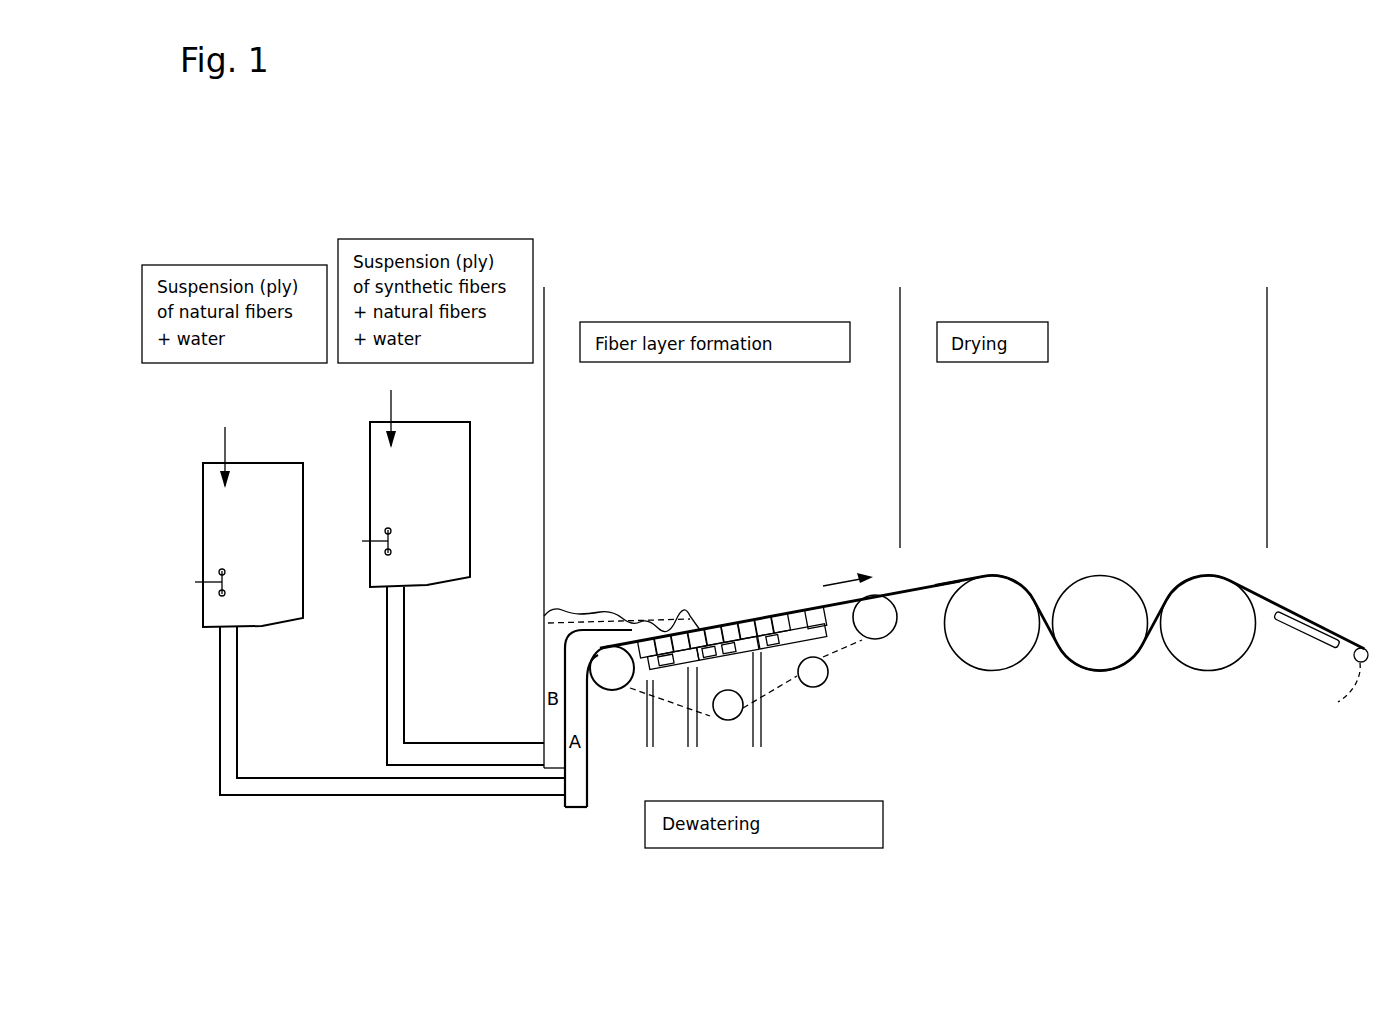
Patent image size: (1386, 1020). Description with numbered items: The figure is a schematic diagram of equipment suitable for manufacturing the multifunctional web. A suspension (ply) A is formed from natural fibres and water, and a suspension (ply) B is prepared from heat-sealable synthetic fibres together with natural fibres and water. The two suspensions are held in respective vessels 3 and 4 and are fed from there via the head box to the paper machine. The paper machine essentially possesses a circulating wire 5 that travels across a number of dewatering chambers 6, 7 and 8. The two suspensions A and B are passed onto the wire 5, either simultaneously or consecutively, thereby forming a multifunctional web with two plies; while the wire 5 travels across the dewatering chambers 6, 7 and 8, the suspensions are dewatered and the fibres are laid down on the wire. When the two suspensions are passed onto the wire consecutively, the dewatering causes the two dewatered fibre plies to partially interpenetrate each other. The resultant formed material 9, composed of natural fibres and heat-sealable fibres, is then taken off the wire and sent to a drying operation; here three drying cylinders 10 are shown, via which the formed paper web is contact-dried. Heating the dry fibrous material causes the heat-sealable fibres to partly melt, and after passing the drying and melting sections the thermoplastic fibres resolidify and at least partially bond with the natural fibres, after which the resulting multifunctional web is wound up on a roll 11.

The vessel 3 is at (276, 617).
The vessel 4 is at (466, 533).
The circulating wire 5 is at (660, 630).
The dewatering chamber 6 is at (642, 638).
The dewatering chamber 7 is at (727, 625).
The dewatering chamber 8 is at (808, 612).
The formed material 9 is at (933, 582).
The drying cylinders 10 is at (1205, 664).
The roll 11 is at (1337, 702).